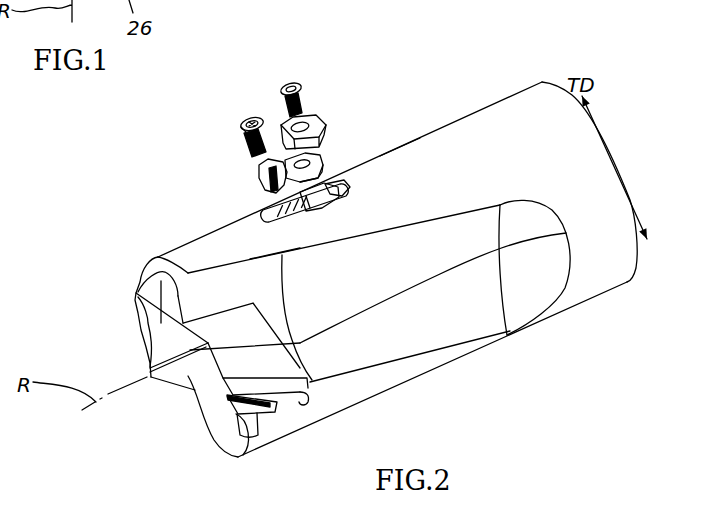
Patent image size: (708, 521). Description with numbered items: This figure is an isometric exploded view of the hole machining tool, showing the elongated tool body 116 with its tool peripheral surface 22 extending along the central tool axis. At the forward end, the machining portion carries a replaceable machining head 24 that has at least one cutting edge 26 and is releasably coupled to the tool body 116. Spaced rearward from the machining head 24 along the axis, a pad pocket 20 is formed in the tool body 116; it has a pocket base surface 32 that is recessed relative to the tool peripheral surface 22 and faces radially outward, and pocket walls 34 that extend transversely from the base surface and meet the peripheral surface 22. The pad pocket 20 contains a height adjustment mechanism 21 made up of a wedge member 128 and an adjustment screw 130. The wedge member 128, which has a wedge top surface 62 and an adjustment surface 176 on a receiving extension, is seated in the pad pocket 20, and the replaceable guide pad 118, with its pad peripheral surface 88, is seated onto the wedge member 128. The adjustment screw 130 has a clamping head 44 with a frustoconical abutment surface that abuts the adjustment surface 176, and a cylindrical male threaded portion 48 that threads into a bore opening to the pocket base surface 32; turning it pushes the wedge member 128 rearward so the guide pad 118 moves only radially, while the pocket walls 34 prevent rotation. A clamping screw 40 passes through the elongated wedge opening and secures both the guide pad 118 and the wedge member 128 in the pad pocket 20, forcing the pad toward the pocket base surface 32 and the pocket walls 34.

The pad pocket 20 is at (247, 207).
The height adjustment mechanism 21 is at (231, 116).
The tool peripheral surface 22 is at (479, 127).
The machining head 24 is at (131, 351).
The cutting edge 26 is at (198, 403).
The pocket base surface 32 is at (338, 192).
The pocket walls 34 is at (326, 192).
The clamping screw 40 is at (285, 72).
The clamping head 44 is at (236, 112).
The cylindrical male threaded portion 48 is at (244, 150).
The wedge top surface 62 is at (262, 201).
The pad peripheral surface 88 is at (327, 138).
The tool body 116 is at (389, 122).
The guide pad 118 is at (326, 104).
The wedge member 128 is at (248, 174).
The adjustment screw 130 is at (258, 102).
The adjustment surface 176 is at (268, 185).